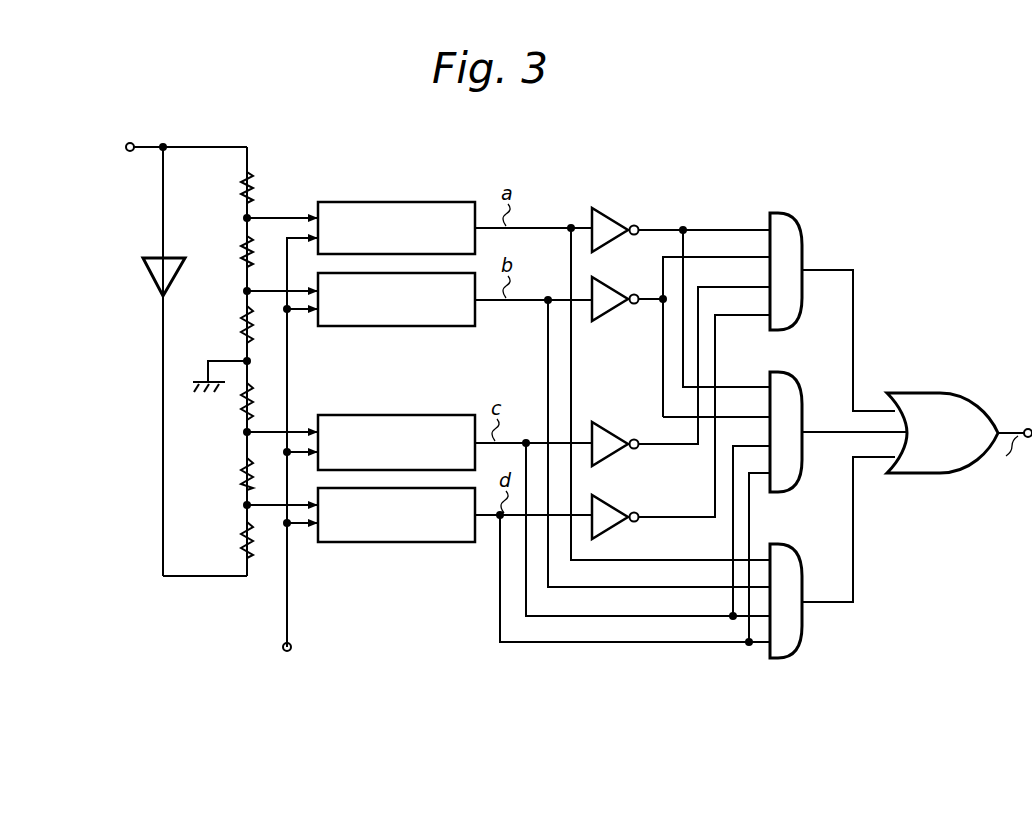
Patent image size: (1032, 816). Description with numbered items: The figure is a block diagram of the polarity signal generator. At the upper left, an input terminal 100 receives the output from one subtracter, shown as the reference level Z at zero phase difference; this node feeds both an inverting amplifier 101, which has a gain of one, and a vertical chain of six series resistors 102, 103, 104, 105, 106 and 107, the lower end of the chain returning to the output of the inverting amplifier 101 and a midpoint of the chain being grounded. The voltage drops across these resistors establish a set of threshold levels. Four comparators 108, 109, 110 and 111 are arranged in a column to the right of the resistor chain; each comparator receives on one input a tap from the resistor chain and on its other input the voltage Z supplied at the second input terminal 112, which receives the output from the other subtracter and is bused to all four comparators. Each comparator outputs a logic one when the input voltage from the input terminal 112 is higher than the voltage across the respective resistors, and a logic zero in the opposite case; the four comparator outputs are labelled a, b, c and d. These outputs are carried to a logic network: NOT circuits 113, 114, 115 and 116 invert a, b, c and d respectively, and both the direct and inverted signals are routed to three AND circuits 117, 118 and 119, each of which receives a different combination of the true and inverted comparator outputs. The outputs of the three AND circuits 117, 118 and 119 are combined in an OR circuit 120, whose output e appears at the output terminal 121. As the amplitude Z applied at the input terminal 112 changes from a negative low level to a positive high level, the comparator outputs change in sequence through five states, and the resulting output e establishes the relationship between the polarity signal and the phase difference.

The input terminal 100 is at (134, 143).
The inverting amplifier 101 is at (152, 257).
The resistor 102 is at (244, 195).
The resistor 103 is at (246, 249).
The resistor 104 is at (248, 326).
The resistor 105 is at (242, 406).
The resistor 106 is at (241, 480).
The resistor 107 is at (239, 546).
The comparator 108 is at (411, 202).
The comparator 109 is at (404, 327).
The comparator 110 is at (398, 415).
The comparator 111 is at (400, 543).
The input terminal 112 is at (292, 646).
The NOT circuit 113 is at (610, 221).
The NOT circuit 114 is at (607, 291).
The NOT circuit 115 is at (607, 433).
The NOT circuit 116 is at (611, 508).
The AND circuit 117 is at (792, 222).
The AND circuit 118 is at (781, 377).
The AND circuit 119 is at (777, 544).
The OR circuit 120 is at (930, 392).
The output terminal 121 is at (1022, 430).